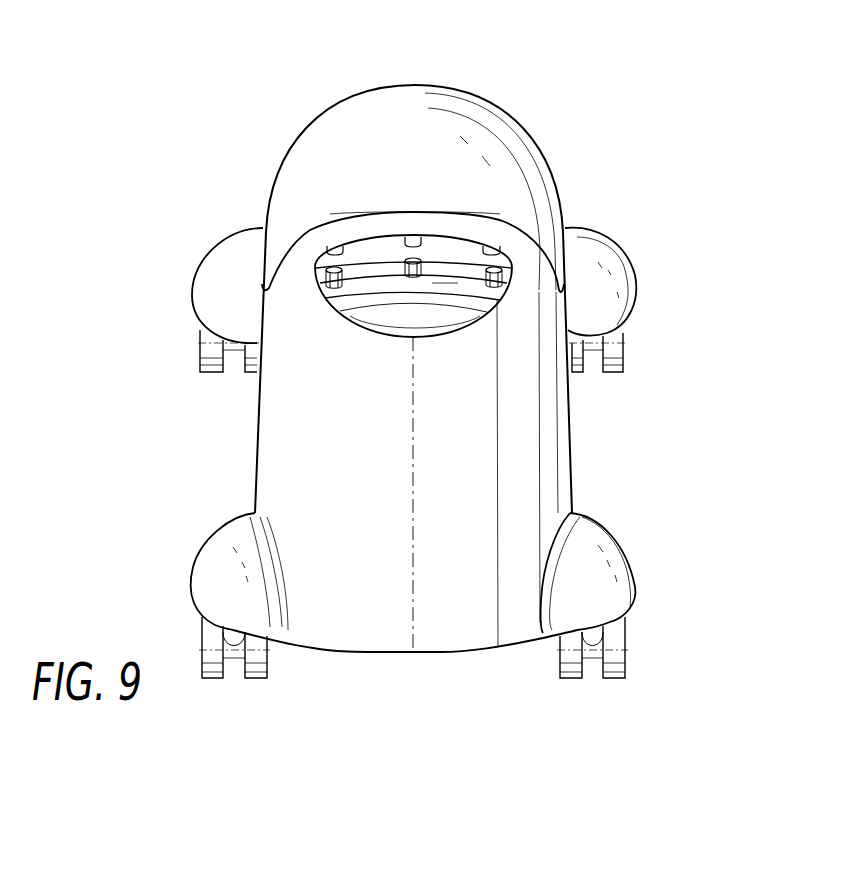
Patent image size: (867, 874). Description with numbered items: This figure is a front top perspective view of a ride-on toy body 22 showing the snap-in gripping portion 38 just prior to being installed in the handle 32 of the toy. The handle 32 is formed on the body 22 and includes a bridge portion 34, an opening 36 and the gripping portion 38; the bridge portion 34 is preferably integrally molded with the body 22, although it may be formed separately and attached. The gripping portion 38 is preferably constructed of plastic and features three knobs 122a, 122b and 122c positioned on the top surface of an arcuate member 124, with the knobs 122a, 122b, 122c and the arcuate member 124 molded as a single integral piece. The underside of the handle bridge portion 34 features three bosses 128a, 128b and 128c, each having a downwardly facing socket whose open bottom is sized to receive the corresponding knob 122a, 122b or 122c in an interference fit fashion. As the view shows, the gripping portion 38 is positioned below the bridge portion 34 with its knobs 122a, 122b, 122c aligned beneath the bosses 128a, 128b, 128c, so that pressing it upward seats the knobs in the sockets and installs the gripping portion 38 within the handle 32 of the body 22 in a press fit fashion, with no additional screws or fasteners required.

The body 22 is at (545, 496).
The handle 32 is at (186, 236).
The bridge portion 34 is at (413, 211).
The opening 36 is at (387, 335).
The gripping portion 38 is at (445, 283).
The knob 122a is at (328, 283).
The knob 122b is at (414, 279).
The knob 122c is at (503, 283).
The arcuate member 124 is at (363, 289).
The boss 128a is at (335, 247).
The boss 128b is at (413, 238).
The boss 128c is at (491, 248).